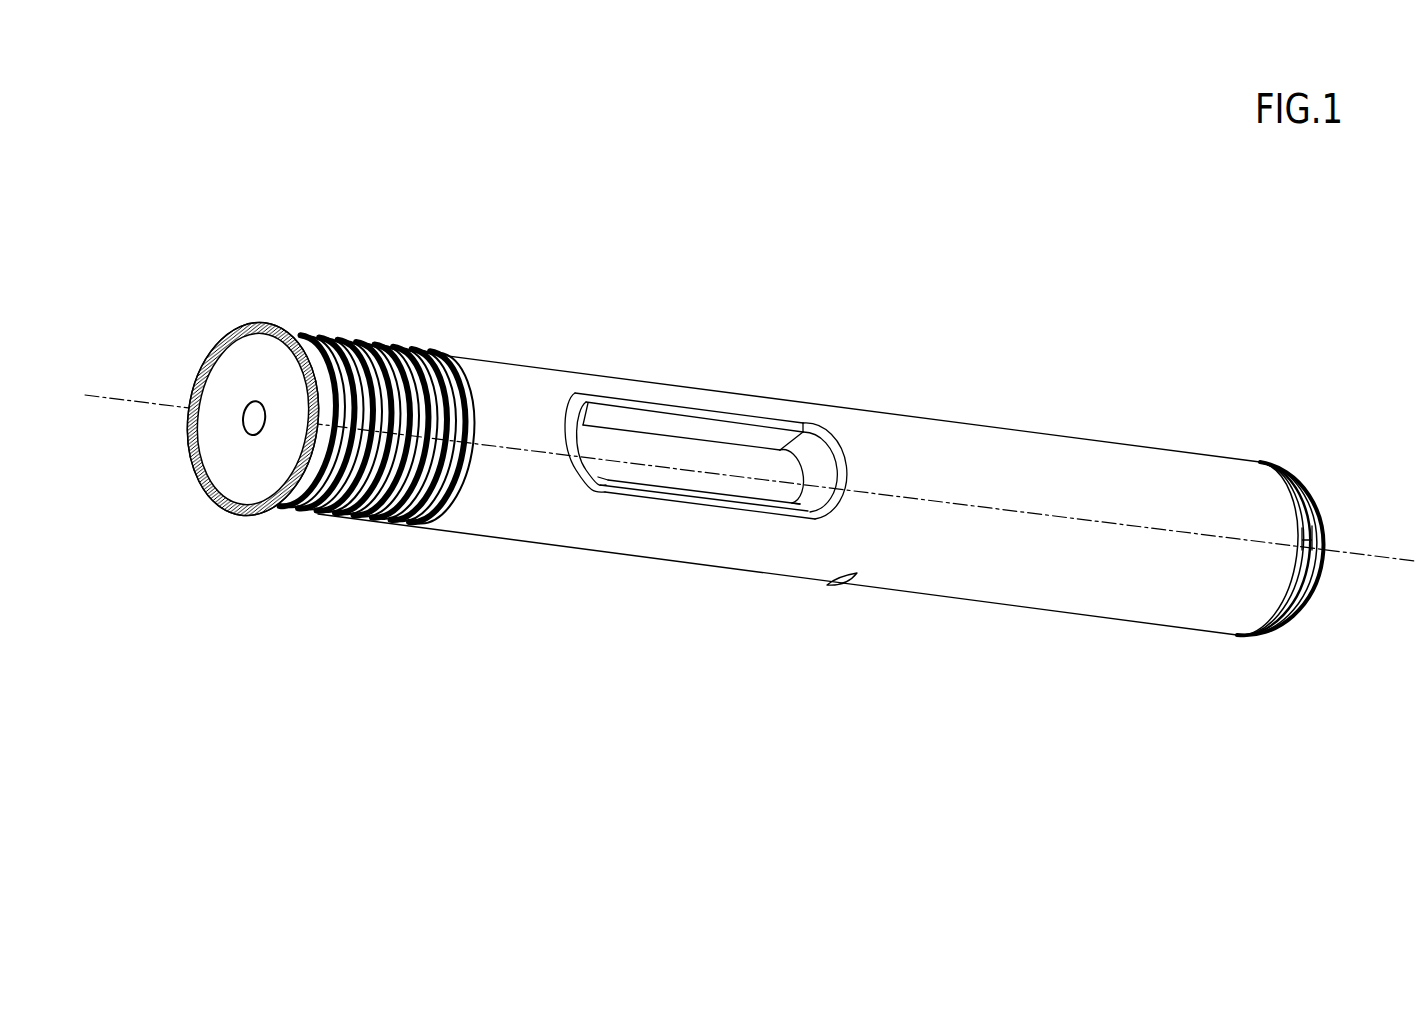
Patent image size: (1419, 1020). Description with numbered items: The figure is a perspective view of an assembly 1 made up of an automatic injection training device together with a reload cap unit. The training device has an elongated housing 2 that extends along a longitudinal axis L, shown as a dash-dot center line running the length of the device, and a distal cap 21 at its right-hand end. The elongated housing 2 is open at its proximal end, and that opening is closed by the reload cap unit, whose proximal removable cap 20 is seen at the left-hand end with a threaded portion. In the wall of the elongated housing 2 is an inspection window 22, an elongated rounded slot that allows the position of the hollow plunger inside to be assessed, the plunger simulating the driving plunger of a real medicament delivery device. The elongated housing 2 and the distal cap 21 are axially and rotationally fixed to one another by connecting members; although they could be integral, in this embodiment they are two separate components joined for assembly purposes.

The assembly 1 is at (737, 673).
The elongated housing 2 is at (983, 502).
The proximal removable cap 20 is at (322, 518).
The distal cap 21 is at (1300, 610).
The inspection window 22 is at (717, 457).
The longitudinal axis L is at (1358, 557).